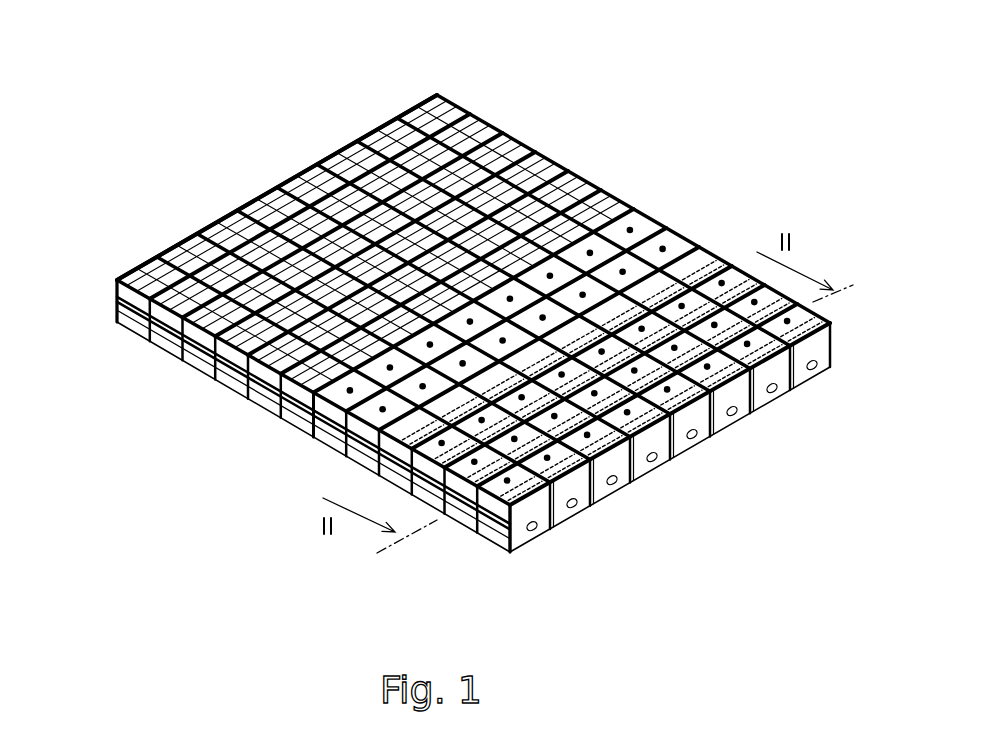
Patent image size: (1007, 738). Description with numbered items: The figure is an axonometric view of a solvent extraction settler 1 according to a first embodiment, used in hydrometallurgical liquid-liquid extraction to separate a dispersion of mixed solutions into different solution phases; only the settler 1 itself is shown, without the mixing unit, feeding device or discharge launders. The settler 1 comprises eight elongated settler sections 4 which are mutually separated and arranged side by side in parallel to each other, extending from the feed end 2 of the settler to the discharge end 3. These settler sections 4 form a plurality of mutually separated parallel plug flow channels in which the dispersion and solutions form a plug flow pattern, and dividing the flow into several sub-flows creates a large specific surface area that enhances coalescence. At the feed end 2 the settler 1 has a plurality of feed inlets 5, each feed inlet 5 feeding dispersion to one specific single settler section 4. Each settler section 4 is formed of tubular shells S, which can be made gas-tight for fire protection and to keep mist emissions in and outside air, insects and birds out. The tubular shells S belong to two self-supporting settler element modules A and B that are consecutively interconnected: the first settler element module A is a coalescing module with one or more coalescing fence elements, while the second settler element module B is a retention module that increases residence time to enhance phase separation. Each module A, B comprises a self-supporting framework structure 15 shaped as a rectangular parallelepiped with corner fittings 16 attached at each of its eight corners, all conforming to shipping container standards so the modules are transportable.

The solvent extraction settler 1 is at (615, 137).
The feed end 2 is at (493, 575).
The discharge end 3 is at (70, 318).
The settler section 4 is at (525, 540).
The feed inlet 5 is at (536, 531).
The framework structure 15 is at (133, 268).
The corner fitting 16 is at (117, 321).
The tubular shell S is at (297, 407).
The first settler element module A is at (507, 560).
The second settler element module B is at (312, 432).